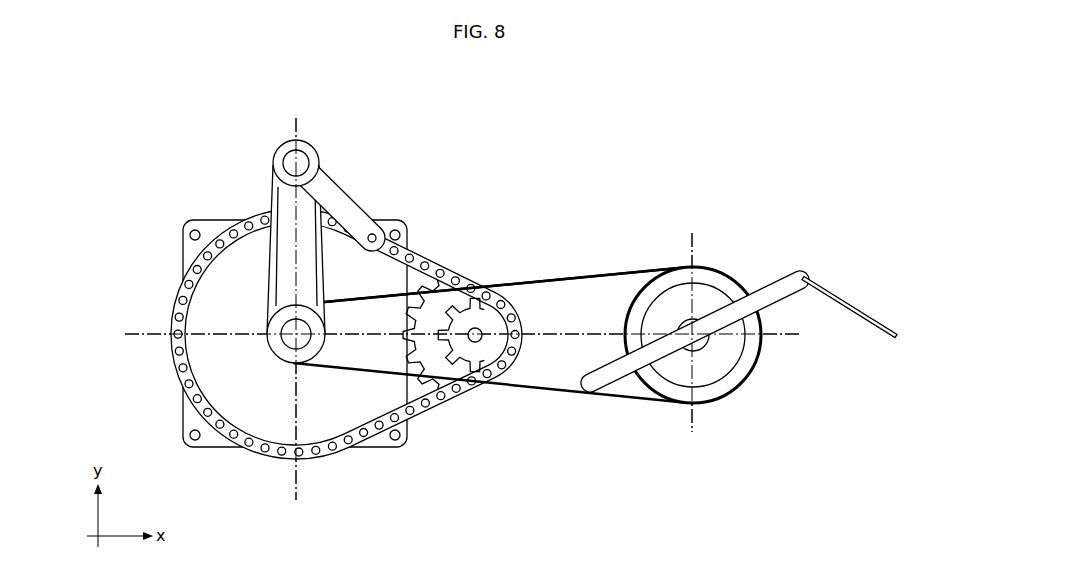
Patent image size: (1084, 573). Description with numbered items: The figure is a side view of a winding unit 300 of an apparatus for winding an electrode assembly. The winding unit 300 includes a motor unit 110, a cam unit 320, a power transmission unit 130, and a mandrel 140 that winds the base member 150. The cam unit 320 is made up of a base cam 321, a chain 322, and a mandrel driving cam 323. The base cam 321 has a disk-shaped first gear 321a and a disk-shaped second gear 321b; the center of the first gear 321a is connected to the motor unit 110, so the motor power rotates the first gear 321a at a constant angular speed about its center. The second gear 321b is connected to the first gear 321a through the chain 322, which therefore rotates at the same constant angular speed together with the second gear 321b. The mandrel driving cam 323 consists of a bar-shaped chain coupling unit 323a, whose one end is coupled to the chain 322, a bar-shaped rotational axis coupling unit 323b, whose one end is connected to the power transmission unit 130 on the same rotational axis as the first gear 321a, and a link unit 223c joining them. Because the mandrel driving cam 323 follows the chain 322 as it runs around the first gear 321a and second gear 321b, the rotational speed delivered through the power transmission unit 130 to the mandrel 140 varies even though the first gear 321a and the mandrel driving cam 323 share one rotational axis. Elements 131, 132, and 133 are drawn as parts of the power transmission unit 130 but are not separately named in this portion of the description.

The winding unit 300 is at (129, 72).
The link unit 223c is at (292, 156).
The mandrel driving cam 323 is at (336, 143).
The chain coupling unit 323a is at (351, 202).
The rotational axis coupling unit 323b is at (282, 280).
The motor unit 110 is at (388, 219).
The cam unit 320 is at (421, 243).
The base cam 321 is at (431, 302).
The first gear 321a is at (215, 372).
The second gear 321b is at (486, 355).
The chain 322 is at (445, 410).
The drive pulley 131 is at (288, 348).
The power transmission unit 130 is at (567, 264).
The belt 133 is at (608, 272).
The driven pulley 132 is at (712, 297).
The mandrel 140 is at (778, 283).
The base member 150 is at (868, 311).